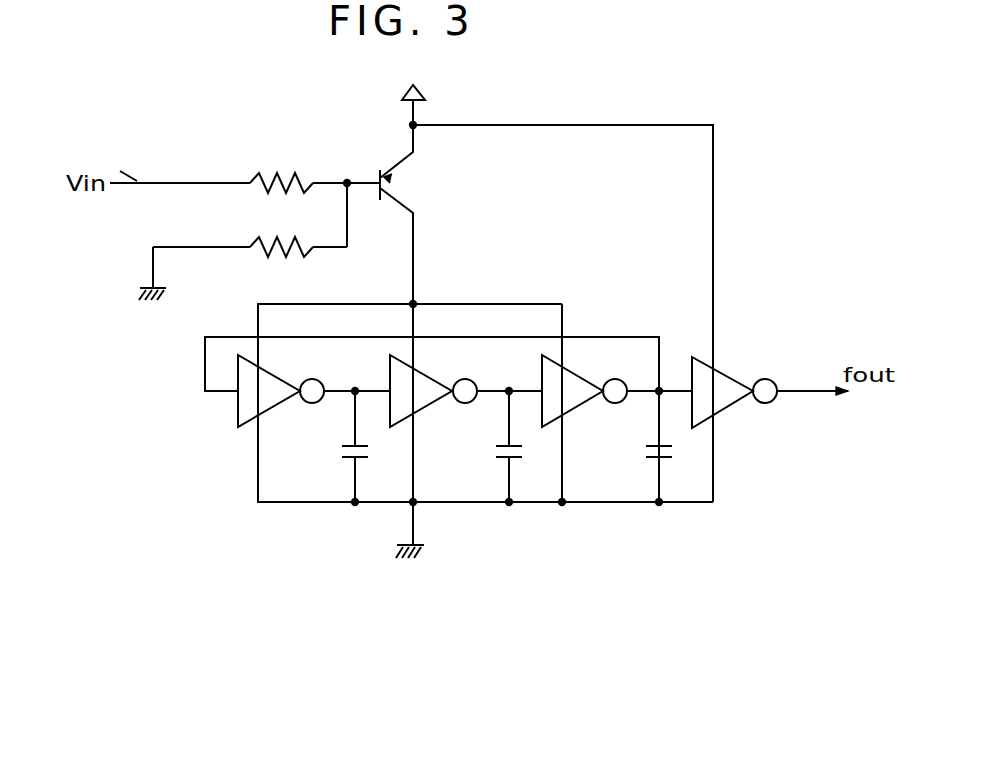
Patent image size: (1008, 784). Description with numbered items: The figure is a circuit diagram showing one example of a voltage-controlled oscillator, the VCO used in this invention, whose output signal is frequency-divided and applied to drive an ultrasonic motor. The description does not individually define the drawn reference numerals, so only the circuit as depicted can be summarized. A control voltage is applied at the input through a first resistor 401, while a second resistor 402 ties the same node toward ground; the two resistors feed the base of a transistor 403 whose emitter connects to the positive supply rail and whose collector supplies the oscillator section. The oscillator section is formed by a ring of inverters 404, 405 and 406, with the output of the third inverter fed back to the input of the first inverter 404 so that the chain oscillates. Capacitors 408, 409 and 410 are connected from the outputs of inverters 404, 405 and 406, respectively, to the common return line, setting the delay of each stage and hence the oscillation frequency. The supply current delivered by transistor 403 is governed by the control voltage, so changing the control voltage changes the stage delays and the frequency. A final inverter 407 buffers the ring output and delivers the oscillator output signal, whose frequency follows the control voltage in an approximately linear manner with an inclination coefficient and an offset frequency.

The resistor 401 is at (281, 168).
The resistor 402 is at (281, 236).
The PNP transistor 403 is at (418, 194).
The inverter 404 is at (282, 388).
The inverter 405 is at (437, 389).
The inverter 406 is at (584, 389).
The inverter 407 is at (734, 392).
The capacitor 408 is at (334, 446).
The capacitor 409 is at (487, 446).
The capacitor 410 is at (640, 446).